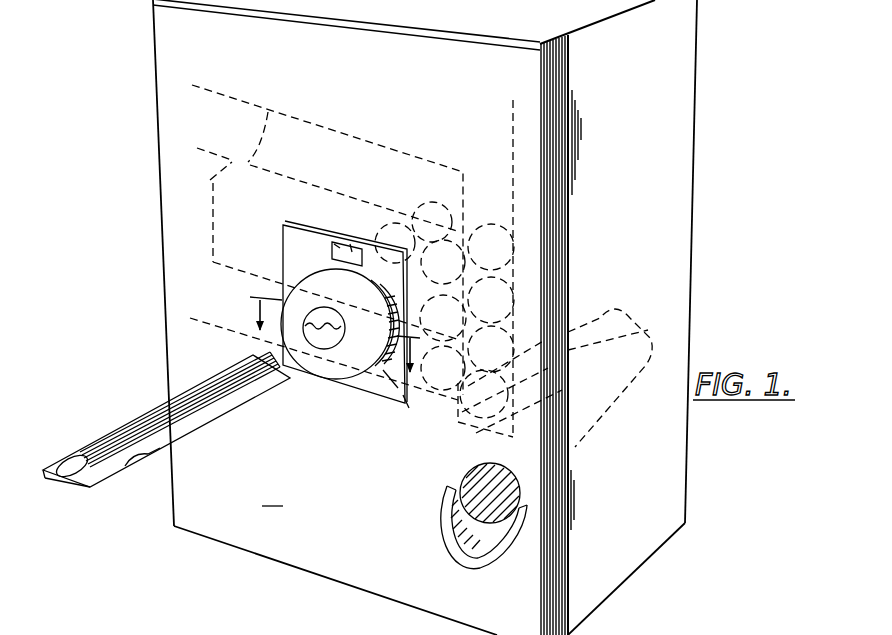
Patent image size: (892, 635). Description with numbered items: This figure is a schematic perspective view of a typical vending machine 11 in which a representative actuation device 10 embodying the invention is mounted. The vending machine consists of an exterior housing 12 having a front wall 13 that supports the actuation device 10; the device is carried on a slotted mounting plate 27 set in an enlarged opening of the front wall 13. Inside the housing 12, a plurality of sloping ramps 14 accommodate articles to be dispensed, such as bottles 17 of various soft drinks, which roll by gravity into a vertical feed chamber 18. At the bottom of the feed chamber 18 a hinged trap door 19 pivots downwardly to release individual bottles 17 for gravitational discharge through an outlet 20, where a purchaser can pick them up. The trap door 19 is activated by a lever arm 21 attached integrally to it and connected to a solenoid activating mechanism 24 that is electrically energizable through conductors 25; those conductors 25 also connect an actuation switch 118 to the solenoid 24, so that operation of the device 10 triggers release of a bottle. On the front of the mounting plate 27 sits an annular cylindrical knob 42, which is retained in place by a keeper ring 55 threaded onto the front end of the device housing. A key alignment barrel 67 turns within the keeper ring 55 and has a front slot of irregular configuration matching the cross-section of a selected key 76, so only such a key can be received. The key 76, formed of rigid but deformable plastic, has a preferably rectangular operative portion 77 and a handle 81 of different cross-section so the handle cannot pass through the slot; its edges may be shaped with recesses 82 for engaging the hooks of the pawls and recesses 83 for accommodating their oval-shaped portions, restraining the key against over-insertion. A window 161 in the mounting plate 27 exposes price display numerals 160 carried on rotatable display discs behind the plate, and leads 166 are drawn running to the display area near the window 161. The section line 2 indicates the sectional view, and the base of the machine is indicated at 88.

The section line arrows 2 is at (334, 335).
The actuation device 10 is at (322, 305).
The vending machine 11 is at (459, 317).
The exterior housing 12 is at (697, 63).
The front wall 13 is at (346, 317).
The sloping ramps 14 is at (323, 242).
The bottles 17 is at (355, 203).
The vertical feed chamber 18 is at (512, 160).
The hinged trap door 19 is at (486, 430).
The outlet 20 is at (497, 510).
The lever arm 21 is at (452, 416).
The solenoid activating mechanism 24 is at (405, 402).
The conductors 25 is at (378, 377).
The mounting plate 27 is at (290, 243).
The annular cylindrical knob 42 is at (333, 378).
The keeper ring 55 is at (312, 353).
The key alignment barrel 67 is at (320, 308).
The key 76 is at (166, 440).
The operative portion 77 is at (185, 392).
The handle 81 is at (60, 478).
The recesses 82 is at (150, 450).
The recesses 83 is at (130, 462).
The base 88 is at (334, 630).
The actuation switch 118 is at (444, 320).
The price display numerals 160 is at (356, 246).
The window 161 is at (340, 248).
The indicator wires 166 is at (355, 243).